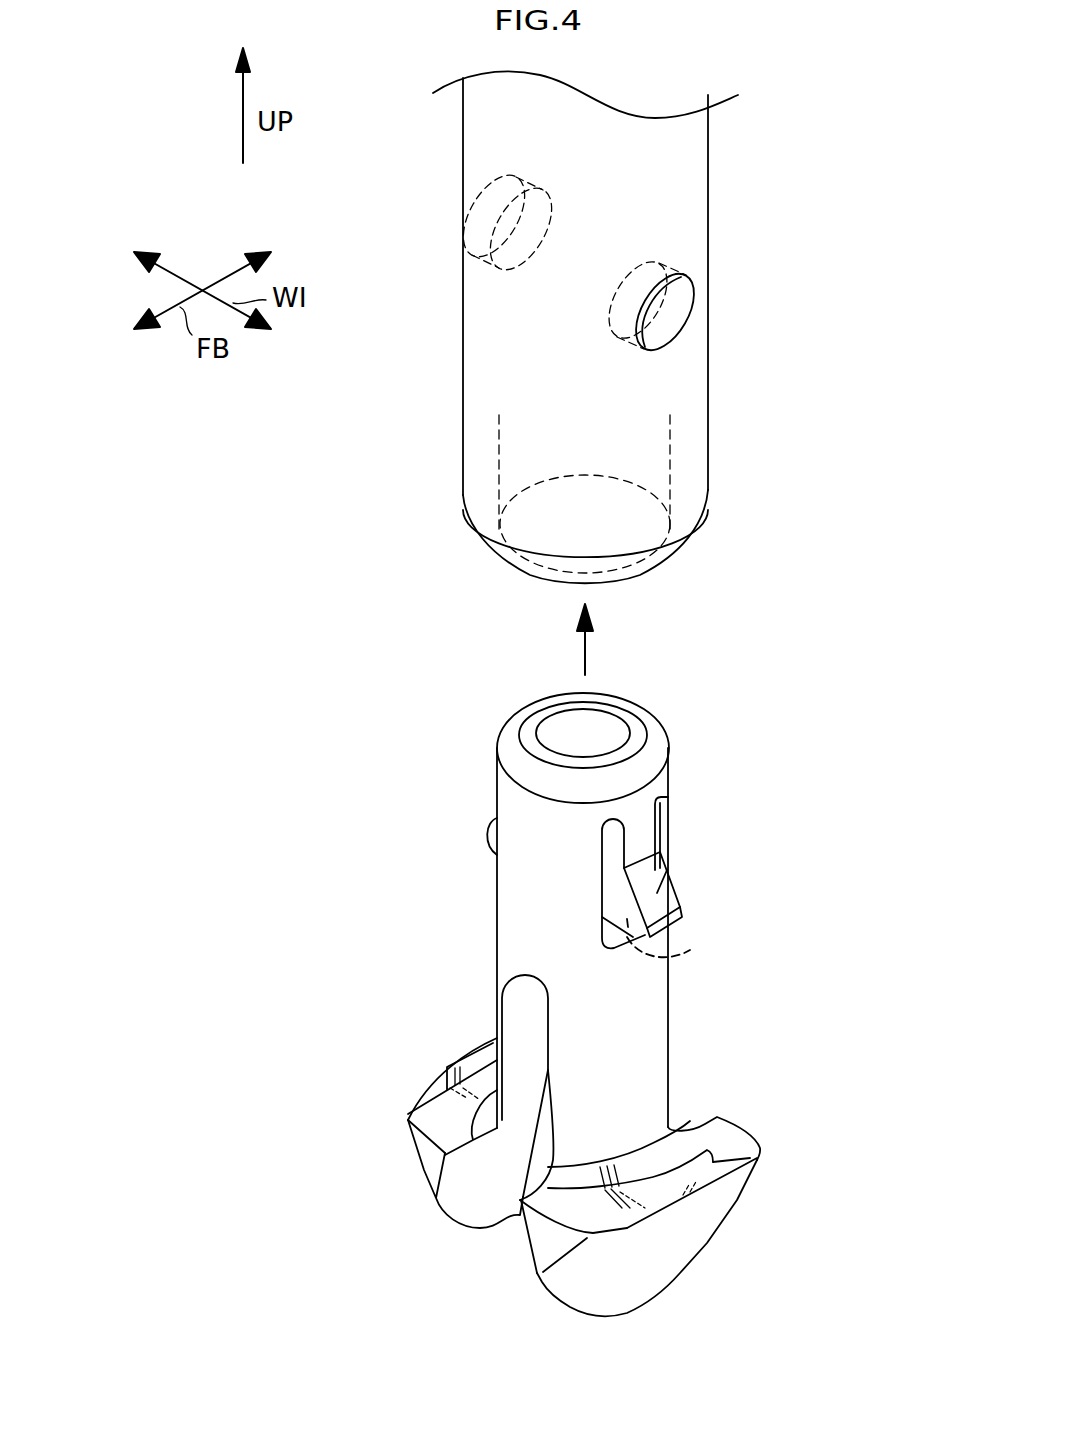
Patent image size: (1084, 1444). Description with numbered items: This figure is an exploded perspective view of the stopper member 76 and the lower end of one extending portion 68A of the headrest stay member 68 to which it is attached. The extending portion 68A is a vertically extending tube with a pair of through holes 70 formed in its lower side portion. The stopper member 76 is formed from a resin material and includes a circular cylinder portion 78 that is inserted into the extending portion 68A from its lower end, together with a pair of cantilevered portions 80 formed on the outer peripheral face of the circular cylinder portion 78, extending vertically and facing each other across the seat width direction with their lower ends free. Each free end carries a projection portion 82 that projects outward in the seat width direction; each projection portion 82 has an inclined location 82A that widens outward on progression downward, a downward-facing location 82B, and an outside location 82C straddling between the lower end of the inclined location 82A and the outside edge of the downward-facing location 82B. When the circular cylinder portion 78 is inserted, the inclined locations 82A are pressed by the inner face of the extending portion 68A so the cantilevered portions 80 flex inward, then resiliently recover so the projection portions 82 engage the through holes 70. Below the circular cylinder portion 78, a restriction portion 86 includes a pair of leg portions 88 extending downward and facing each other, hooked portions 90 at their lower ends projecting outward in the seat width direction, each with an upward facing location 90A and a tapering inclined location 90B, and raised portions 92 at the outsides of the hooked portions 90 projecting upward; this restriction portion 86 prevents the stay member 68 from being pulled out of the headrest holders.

The extending portion 68A is at (649, 327).
The stay member 68 is at (710, 148).
The through hole 70 is at (467, 208).
The stopper member 76 is at (222, 704).
The circular cylinder portion 78 is at (687, 714).
The cantilevered portion 80 is at (684, 816).
The projection portion 82 is at (642, 867).
The inclined location 82A is at (668, 877).
The downward-facing location 82B is at (690, 950).
The outside location 82C is at (678, 920).
The restriction portion 86 is at (804, 1017).
The leg portion 88 is at (498, 1012).
The hooked portion 90 is at (574, 1172).
The upward facing location 90A is at (442, 1127).
The inclined location 90B is at (418, 1163).
The raised portion 92 is at (462, 1050).